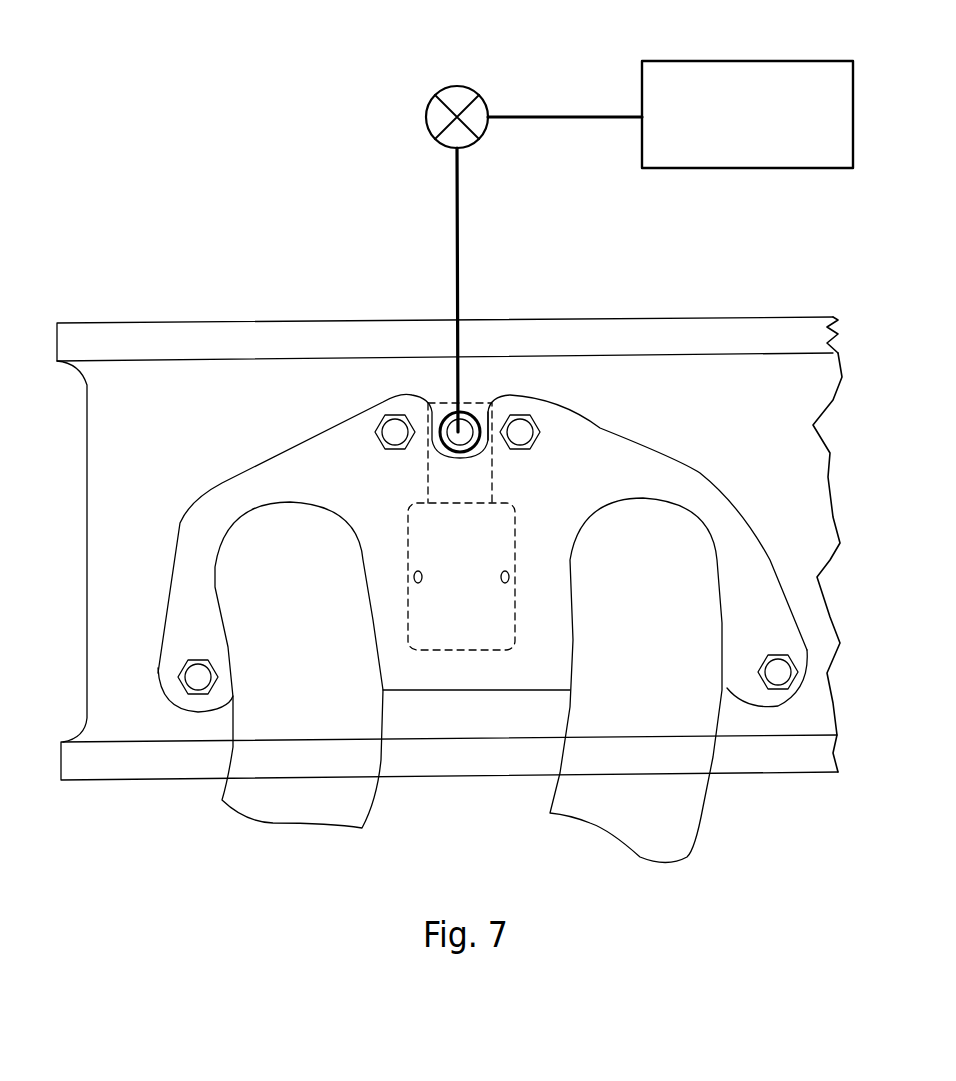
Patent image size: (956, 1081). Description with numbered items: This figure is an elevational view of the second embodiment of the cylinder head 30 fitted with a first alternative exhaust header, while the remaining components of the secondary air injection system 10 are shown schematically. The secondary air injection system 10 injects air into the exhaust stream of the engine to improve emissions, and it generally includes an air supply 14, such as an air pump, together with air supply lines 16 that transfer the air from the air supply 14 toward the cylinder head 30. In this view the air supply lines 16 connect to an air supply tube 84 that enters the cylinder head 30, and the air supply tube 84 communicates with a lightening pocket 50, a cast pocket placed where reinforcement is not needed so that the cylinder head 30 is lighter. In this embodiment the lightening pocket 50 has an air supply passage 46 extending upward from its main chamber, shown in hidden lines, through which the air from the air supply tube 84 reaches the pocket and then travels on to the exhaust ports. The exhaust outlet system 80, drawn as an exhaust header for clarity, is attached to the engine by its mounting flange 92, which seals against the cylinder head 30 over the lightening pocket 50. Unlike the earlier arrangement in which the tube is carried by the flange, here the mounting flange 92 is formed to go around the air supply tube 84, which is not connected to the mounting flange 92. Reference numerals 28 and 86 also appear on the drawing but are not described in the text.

The secondary air injection system 10 is at (227, 153).
The air supply 14 is at (716, 67).
The air supply lines 16 is at (523, 113).
The frame rail web 28 is at (100, 452).
The cylinder head 30 is at (147, 322).
The air supply passage 46 is at (440, 477).
The lightening pocket 50 is at (460, 627).
The exhaust outlet system 80 is at (710, 803).
The air supply tube 84 is at (475, 410).
The fitting recess 86 is at (487, 420).
The mounting flange 92 is at (600, 428).